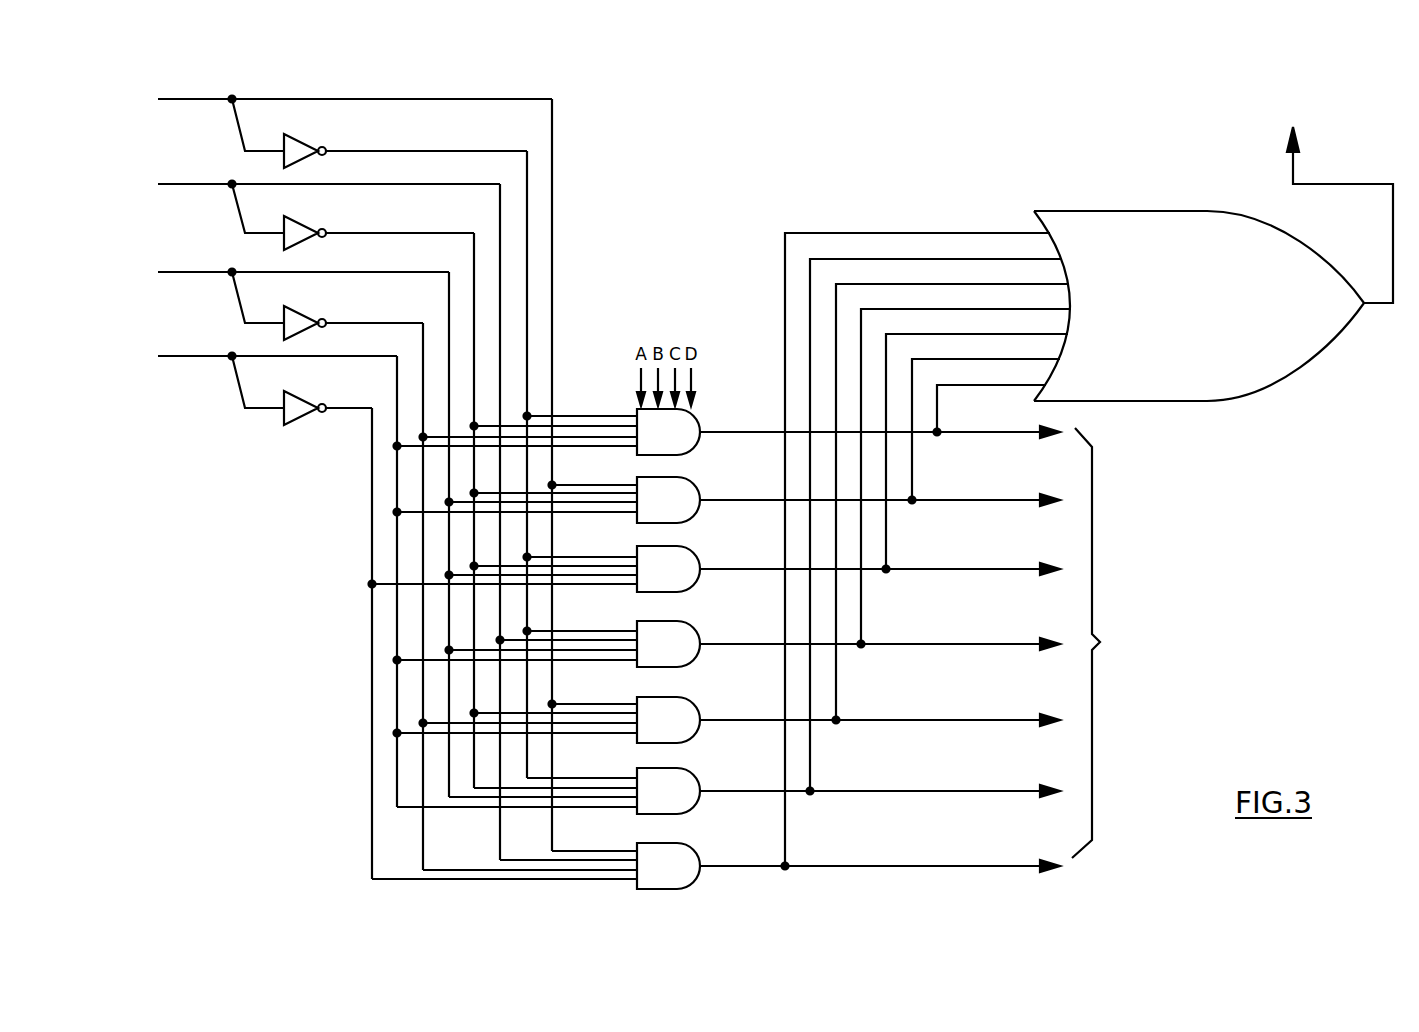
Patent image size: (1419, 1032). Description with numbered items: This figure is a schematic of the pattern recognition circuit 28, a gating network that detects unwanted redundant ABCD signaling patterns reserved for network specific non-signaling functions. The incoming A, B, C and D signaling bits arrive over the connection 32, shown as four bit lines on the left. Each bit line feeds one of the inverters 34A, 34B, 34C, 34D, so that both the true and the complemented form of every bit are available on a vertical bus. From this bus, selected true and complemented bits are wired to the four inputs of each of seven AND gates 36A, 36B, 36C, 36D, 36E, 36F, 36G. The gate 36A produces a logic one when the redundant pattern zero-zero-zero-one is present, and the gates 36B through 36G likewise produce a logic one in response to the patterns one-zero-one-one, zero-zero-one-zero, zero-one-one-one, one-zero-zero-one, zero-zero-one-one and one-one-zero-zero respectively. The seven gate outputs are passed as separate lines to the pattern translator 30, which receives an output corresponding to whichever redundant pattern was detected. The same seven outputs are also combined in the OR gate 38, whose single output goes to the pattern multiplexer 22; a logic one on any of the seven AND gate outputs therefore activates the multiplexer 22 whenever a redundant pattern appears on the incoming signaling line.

The pattern recognition circuit 28 is at (247, 619).
The connection 32 is at (150, 78).
The inverter 34A is at (298, 135).
The inverter 34B is at (298, 217).
The inverter 34C is at (298, 307).
The inverter 34D is at (298, 392).
The AND gate 36A is at (700, 414).
The AND gate 36B is at (700, 482).
The AND gate 36C is at (700, 551).
The AND gate 36D is at (700, 626).
The AND gate 36E is at (700, 702).
The AND gate 36F is at (700, 773).
The AND gate 36G is at (700, 848).
The OR gate 38 is at (1142, 402).
The pattern multiplexer 22 is at (1308, 185).
The pattern translator 30 is at (1157, 643).